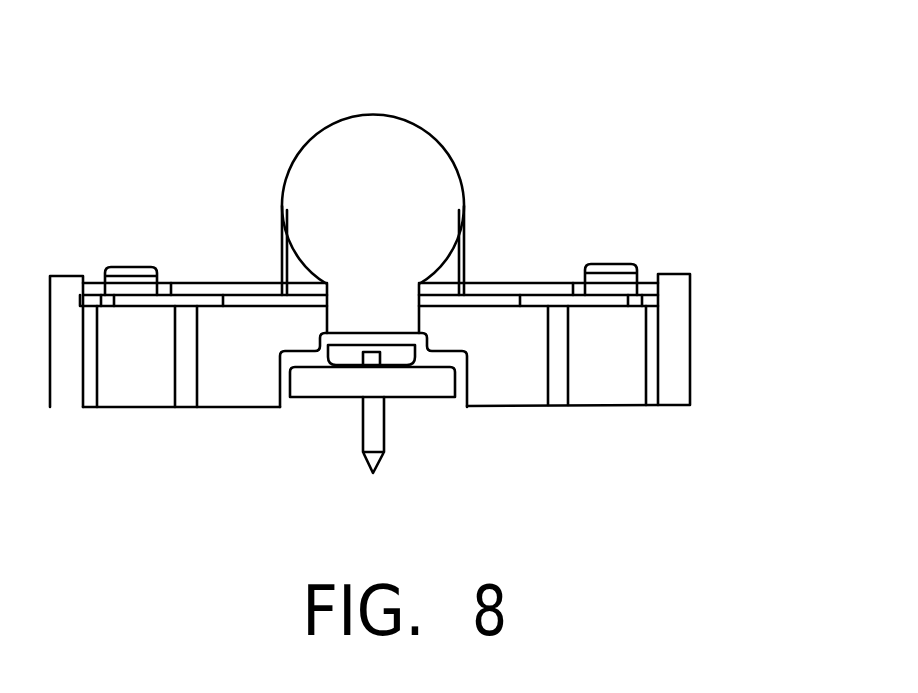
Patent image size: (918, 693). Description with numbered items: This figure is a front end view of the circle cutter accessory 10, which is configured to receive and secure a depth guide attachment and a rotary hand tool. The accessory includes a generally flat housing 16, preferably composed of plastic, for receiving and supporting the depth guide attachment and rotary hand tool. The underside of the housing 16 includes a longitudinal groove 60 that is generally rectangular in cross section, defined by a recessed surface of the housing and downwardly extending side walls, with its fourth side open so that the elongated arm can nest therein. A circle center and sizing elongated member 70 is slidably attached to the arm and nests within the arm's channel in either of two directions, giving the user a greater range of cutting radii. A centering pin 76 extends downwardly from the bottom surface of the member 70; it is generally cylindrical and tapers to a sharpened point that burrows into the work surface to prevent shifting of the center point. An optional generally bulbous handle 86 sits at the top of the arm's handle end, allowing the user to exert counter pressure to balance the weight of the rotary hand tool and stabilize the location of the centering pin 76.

The circle cutter accessory 10 is at (453, 96).
The housing 16 is at (675, 405).
The longitudinal groove 60 is at (413, 363).
The circle center and sizing elongated member 70 is at (327, 383).
The centering pin 76 is at (387, 437).
The handle 86 is at (423, 183).